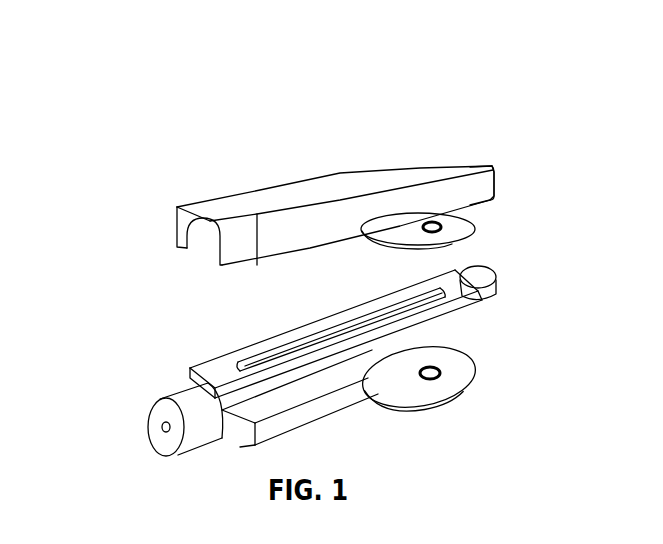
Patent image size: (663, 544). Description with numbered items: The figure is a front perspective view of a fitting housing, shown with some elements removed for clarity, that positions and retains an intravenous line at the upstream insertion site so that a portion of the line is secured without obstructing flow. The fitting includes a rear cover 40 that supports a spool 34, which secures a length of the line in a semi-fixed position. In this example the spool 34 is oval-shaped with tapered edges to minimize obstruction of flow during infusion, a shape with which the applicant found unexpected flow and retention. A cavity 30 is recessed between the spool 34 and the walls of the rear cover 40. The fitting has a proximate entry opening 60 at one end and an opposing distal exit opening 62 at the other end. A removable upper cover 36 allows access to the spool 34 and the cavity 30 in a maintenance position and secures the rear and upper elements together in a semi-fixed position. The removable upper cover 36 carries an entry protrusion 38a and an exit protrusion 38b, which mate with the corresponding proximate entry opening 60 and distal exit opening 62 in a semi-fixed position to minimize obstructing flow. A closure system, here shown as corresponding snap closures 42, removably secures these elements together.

The cavity 30 is at (262, 338).
The spool 34 is at (408, 331).
The removable upper cover 36 is at (325, 193).
The entry protrusion 38a is at (205, 218).
The exit protrusion 38b is at (468, 165).
The rear cover 40 is at (345, 403).
The snap closures 42 is at (474, 229).
The proximate entry opening 60 is at (165, 428).
The distal exit opening 62 is at (487, 280).